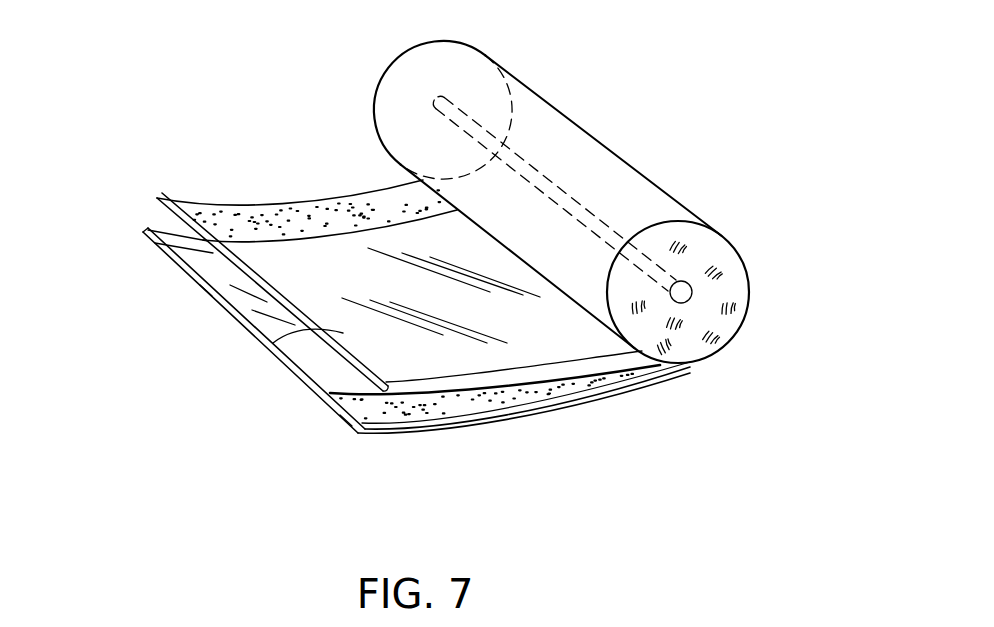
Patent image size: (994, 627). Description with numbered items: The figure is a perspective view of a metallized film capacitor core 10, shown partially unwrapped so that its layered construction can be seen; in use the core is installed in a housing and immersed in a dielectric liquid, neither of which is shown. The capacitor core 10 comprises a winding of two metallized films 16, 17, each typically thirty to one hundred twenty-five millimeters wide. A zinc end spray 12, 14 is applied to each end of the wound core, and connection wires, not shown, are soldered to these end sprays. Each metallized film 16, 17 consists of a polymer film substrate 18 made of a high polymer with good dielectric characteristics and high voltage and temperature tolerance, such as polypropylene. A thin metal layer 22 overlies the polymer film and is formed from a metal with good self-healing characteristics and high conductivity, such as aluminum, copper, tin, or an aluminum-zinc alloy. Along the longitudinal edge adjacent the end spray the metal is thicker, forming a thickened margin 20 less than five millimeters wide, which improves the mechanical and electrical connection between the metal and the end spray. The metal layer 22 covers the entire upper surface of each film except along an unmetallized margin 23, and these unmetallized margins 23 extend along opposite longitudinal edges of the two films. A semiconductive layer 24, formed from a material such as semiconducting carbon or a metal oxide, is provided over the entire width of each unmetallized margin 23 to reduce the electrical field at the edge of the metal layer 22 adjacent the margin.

The capacitor core 10 is at (658, 190).
The end spray 12 is at (742, 321).
The end spray 14 is at (377, 93).
The metallized film 16 is at (252, 204).
The metallized film 17 is at (503, 418).
The polymer film substrate 18 is at (212, 298).
The thickened margin 20 is at (166, 236).
The metal layer 22 is at (305, 353).
The unmetallized margin 23 is at (352, 436).
The semiconductive layer 24 is at (310, 212).